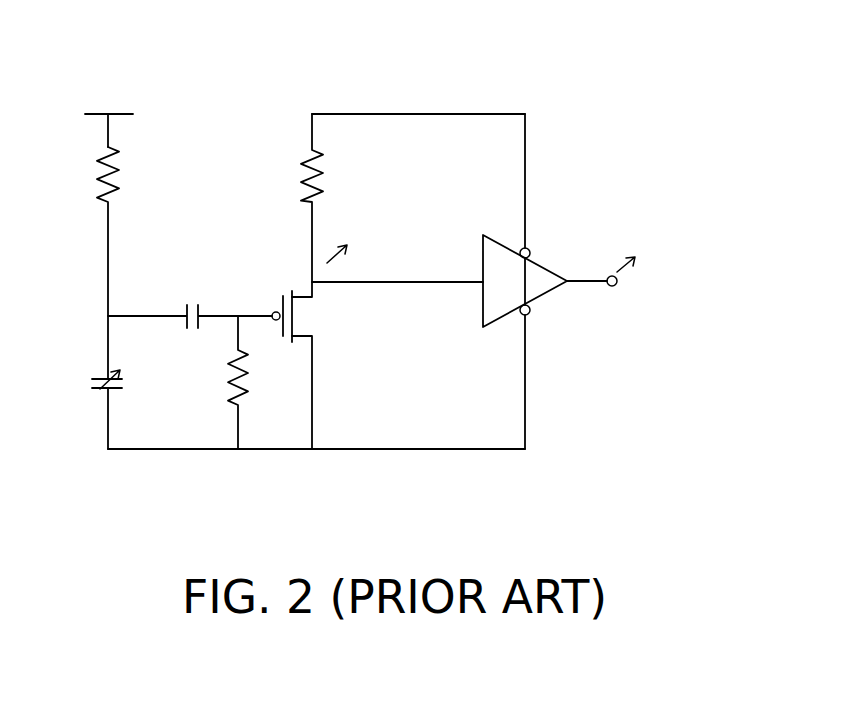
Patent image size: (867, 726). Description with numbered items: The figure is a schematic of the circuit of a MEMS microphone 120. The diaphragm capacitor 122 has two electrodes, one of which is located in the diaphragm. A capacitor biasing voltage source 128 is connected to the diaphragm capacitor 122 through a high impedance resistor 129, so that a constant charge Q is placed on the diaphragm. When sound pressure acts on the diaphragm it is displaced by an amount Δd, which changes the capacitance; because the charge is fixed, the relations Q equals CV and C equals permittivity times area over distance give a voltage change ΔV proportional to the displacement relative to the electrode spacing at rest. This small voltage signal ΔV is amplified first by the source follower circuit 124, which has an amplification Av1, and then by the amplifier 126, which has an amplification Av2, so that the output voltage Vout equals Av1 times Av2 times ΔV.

The MEMS microphone 120 is at (578, 81).
The diaphragm capacitor 122 is at (90, 384).
The source follower circuit 124 is at (305, 318).
The amplifier 126 is at (550, 295).
The capacitor biasing voltage source 128 is at (138, 94).
The high impedance resistor 129 is at (100, 171).